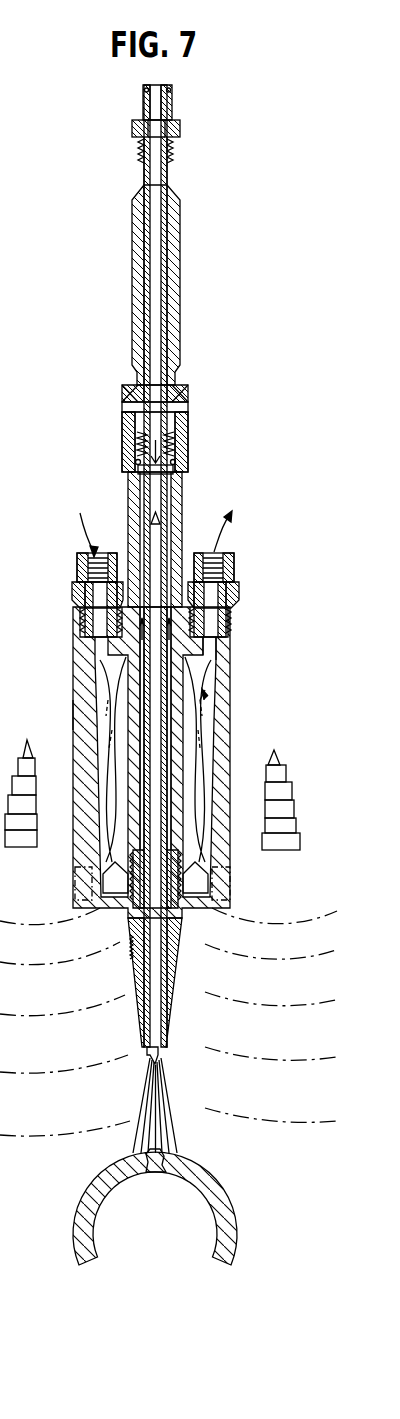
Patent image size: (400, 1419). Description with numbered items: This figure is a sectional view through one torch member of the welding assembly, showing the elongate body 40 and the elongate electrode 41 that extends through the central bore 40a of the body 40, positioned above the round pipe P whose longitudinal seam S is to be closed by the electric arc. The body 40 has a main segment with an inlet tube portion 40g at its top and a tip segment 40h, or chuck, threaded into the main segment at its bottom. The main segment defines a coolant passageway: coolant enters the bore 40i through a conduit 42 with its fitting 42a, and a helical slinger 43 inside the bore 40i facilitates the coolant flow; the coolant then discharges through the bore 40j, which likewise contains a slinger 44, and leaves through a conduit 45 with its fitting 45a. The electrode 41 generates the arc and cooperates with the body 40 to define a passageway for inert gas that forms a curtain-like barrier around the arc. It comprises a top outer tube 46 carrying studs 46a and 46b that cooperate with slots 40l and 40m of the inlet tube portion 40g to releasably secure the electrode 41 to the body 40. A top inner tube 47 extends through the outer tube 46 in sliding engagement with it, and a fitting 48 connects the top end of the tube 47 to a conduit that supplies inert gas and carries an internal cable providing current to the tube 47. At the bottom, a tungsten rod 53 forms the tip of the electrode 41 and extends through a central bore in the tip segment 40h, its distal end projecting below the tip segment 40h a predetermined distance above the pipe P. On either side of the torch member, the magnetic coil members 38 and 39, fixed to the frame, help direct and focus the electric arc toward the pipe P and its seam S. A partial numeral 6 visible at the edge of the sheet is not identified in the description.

The fitting 48 is at (178, 124).
The top inner tube 47 is at (172, 160).
The top outer tube 46 is at (172, 230).
The electrode 41 is at (180, 297).
The stud 46a is at (188, 404).
The stud 46b is at (122, 404).
The slot 40m is at (122, 431).
The slot 40l is at (188, 431).
The inlet tube portion 40g is at (188, 462).
The conduit 42 is at (77, 560).
The fitting 42a is at (76, 592).
The helical slinger 43 is at (100, 665).
The bore 40i is at (73, 715).
The conduit 45 is at (232, 560).
The fitting 45a is at (232, 600).
The body 40 is at (230, 650).
The slinger 44 is at (205, 663).
The central bore 40a is at (168, 690).
The bore 40j is at (210, 718).
The magnetic coil member 39 is at (12, 848).
The magnetic coil member 38 is at (282, 852).
The tip segment 40h is at (172, 997).
The tungsten rod 53 is at (164, 1030).
The longitudinal seam S is at (160, 1176).
The pipe P is at (237, 1212).
The partial numeral 6 is at (4, 356).